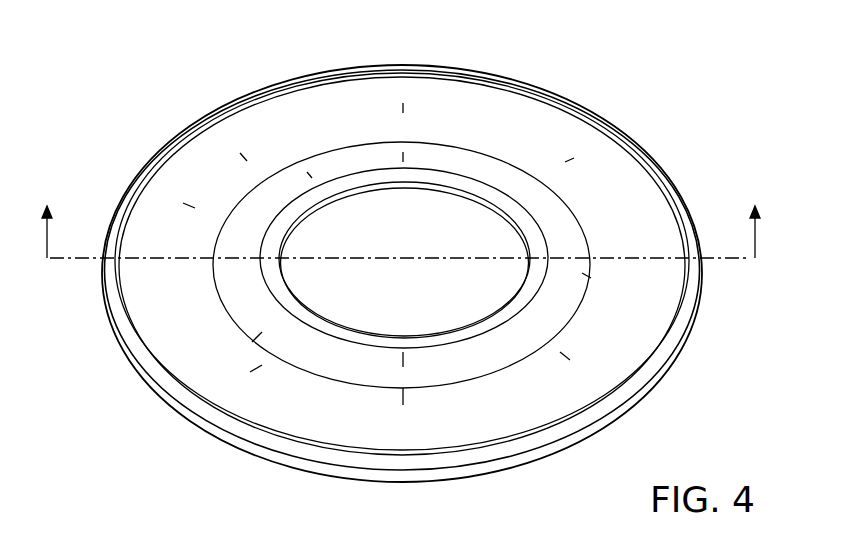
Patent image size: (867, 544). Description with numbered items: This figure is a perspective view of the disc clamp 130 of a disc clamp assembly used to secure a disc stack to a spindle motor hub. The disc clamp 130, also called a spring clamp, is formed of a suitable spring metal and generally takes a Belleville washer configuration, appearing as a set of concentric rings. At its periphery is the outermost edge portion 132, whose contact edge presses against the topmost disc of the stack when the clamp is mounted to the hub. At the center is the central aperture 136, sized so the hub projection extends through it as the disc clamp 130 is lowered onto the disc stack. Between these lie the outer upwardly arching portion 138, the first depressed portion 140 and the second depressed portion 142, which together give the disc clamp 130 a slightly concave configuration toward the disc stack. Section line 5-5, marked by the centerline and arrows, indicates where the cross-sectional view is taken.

The section line 5- 5 is at (400, 223).
The disc clamp 130 is at (213, 110).
The outermost edge portion 132 is at (352, 460).
The central aperture 136 is at (467, 226).
The outer upwardly arching portion 138 is at (165, 338).
The first depressed portion 140 is at (267, 330).
The second depressed portion 142 is at (328, 188).